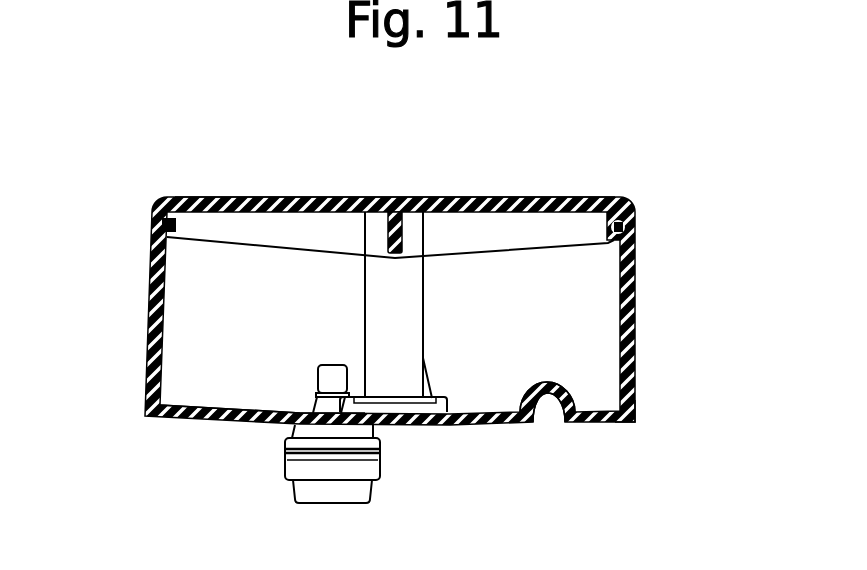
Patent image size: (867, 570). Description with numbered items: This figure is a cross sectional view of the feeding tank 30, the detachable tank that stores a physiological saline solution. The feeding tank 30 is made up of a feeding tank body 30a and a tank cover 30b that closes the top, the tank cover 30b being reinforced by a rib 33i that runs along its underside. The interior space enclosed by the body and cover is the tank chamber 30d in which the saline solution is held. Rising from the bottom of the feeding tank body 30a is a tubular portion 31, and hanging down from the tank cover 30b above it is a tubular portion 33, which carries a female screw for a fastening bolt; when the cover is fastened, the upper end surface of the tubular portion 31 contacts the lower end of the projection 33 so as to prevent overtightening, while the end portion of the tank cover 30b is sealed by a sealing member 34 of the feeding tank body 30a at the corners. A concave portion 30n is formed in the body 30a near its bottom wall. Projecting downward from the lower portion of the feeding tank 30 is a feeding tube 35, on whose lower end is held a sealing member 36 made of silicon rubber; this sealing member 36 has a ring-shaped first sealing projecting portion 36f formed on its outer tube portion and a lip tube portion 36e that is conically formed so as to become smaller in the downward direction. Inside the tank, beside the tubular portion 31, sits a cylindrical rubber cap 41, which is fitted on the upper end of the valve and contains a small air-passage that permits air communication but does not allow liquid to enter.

The feeding tank 30 is at (412, 333).
The feeding tank body 30a is at (635, 398).
The tank cover 30b is at (513, 205).
The tank chamber 30d is at (256, 268).
The concave portion 30n is at (540, 413).
The tubular portion 31 is at (412, 330).
The tubular portion 33 is at (413, 245).
The rib 33i is at (238, 237).
The sealing member 34 is at (172, 217).
The feeding tube 35 is at (290, 431).
The sealing member 36 is at (330, 489).
The lip tube portion 36e is at (298, 491).
The first sealing projecting portion 36f is at (286, 452).
The cap 41 is at (322, 378).